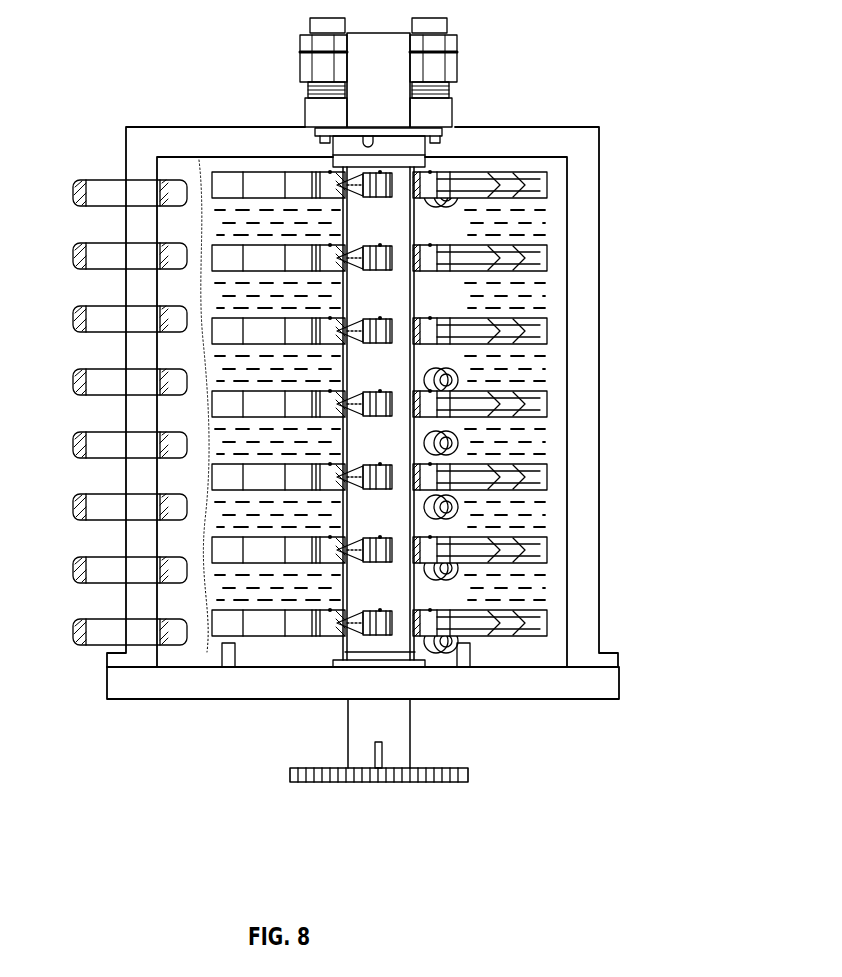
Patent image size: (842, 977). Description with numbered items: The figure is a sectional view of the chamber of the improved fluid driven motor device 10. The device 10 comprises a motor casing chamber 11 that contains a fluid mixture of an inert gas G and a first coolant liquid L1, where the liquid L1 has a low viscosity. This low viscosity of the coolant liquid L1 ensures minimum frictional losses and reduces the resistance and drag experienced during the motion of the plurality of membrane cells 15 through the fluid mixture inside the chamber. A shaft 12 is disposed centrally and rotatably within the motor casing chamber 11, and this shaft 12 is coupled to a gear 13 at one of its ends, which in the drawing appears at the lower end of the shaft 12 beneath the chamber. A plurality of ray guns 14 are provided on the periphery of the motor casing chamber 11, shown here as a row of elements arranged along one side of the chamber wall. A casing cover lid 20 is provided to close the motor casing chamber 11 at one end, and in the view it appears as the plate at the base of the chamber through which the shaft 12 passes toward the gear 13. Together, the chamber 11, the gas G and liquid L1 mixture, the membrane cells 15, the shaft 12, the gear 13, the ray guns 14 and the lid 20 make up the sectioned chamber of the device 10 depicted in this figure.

The improved fluid driven motor device 10 is at (573, 65).
The motor casing chamber 11 is at (600, 540).
The shaft 12 is at (368, 50).
The gear 13 is at (290, 768).
The ray guns 14 is at (117, 192).
The membrane cells 15 is at (520, 177).
The casing cover lid 20 is at (530, 700).
The first coolant liquid L1 is at (222, 355).
The inert gas G is at (167, 535).